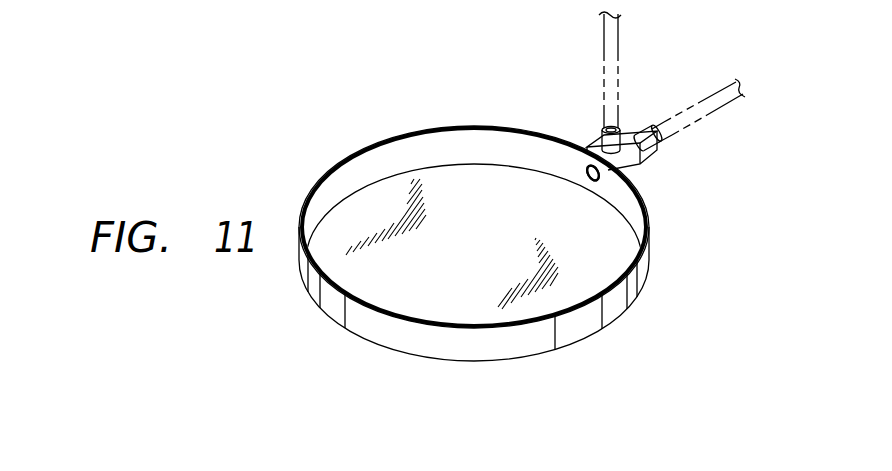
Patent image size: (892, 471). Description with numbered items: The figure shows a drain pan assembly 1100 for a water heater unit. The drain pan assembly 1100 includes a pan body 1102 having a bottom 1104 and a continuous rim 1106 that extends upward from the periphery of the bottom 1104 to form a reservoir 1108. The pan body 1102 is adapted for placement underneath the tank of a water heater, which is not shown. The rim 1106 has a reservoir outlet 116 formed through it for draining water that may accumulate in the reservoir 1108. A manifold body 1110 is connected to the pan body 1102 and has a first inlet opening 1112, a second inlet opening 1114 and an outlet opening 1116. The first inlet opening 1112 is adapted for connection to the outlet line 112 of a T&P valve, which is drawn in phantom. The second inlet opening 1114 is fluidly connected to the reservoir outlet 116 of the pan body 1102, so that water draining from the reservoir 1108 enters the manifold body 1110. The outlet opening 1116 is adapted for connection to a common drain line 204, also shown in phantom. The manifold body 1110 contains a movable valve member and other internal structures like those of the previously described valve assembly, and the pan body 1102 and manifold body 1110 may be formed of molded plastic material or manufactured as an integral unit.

The drain pan assembly 1100 is at (400, 80).
The pan body 1102 is at (660, 266).
The bottom 1104 is at (357, 207).
The continuous rim 1106 is at (463, 131).
The reservoir 1108 is at (502, 259).
The manifold body 1110 is at (661, 191).
The first inlet opening 1112 is at (603, 130).
The second inlet opening 1114 is at (592, 183).
The outlet opening 1116 is at (658, 150).
The outlet line 112 is at (604, 42).
The common drain line 204 is at (718, 95).
The reservoir outlet 116 is at (585, 173).